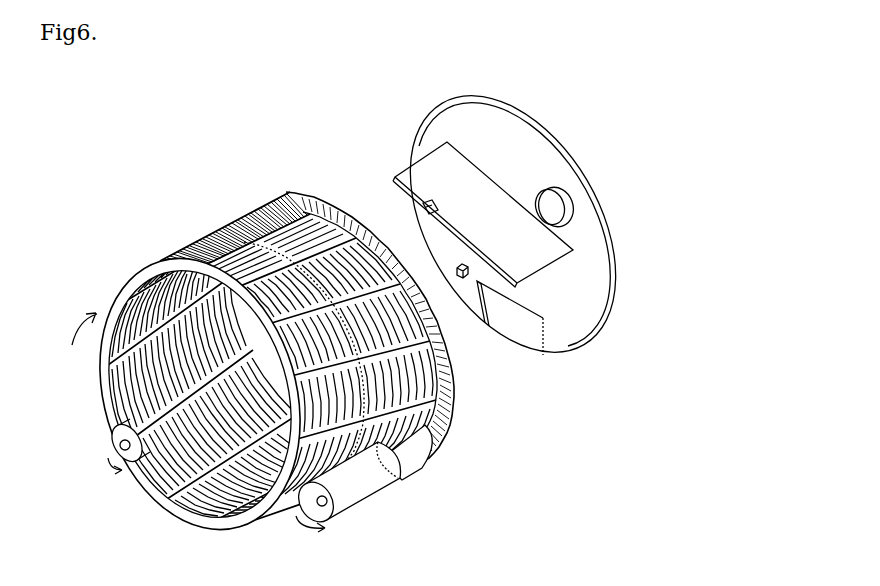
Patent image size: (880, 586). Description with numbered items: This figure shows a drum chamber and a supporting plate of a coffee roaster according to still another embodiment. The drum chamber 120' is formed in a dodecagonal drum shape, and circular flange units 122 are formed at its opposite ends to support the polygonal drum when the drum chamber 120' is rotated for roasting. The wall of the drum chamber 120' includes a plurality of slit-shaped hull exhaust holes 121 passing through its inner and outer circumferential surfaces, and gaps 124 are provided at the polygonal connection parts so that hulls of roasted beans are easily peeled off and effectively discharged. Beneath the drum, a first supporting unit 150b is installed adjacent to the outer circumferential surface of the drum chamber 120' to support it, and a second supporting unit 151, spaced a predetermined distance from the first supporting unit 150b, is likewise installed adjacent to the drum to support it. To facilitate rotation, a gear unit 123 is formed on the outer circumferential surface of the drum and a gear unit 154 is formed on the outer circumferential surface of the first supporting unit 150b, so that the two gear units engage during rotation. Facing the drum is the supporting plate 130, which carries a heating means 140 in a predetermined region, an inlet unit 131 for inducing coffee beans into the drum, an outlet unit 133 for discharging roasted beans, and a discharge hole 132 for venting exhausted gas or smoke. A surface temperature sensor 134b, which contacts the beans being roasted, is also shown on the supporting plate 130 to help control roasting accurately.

The drum chamber 120' is at (260, 342).
The slit-shaped hull exhaust holes 121 is at (258, 232).
The circular flange units 122 is at (295, 196).
The gear unit 123 is at (210, 240).
The gaps 124 is at (187, 478).
The supporting plate 130 is at (497, 229).
The inlet unit 131 is at (424, 210).
The discharge hole 132 is at (563, 203).
The outlet unit 133 is at (503, 320).
The surface temperature sensor 134b is at (463, 282).
The heating means 140 is at (454, 214).
The first supporting unit 150b is at (398, 463).
The second supporting unit 151 is at (122, 432).
The gear unit 154 is at (380, 480).